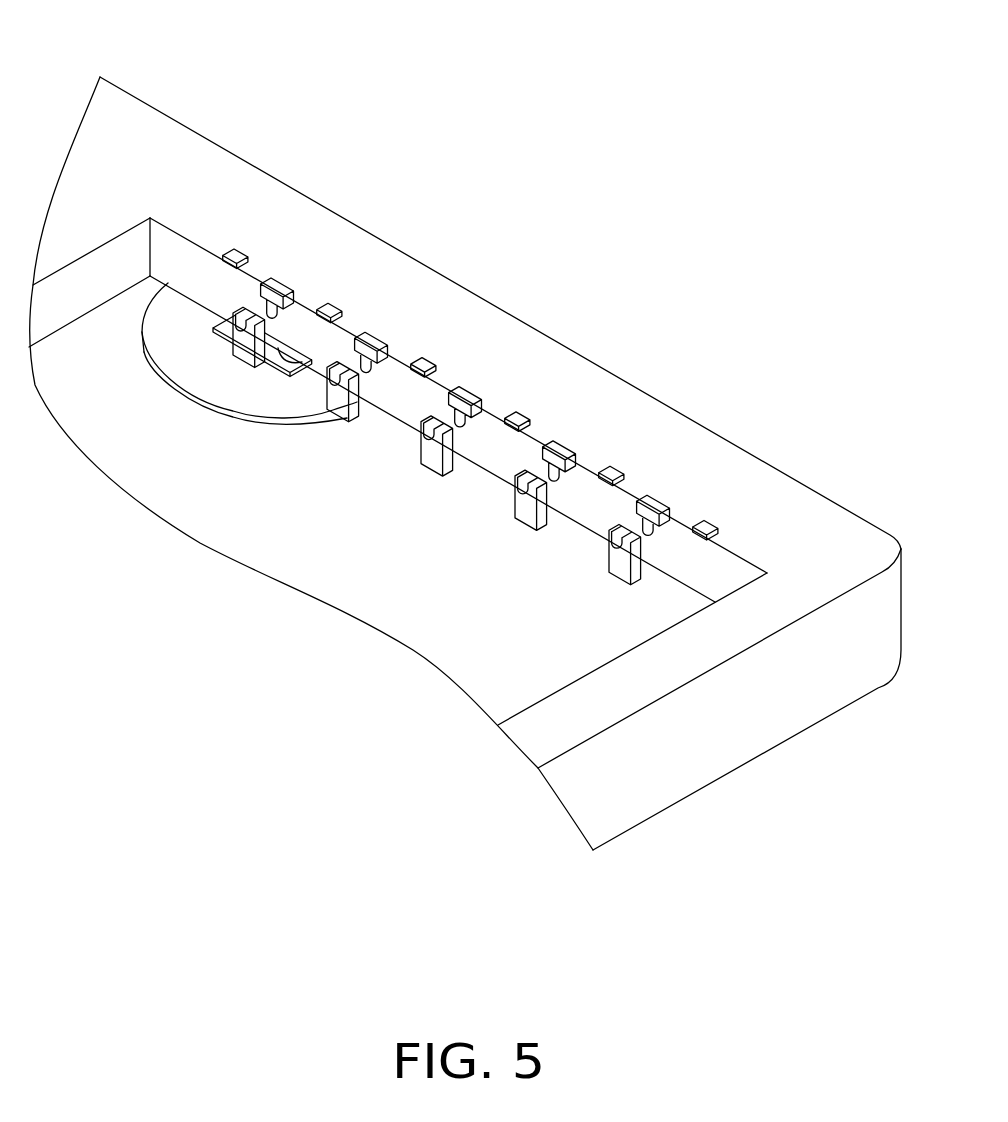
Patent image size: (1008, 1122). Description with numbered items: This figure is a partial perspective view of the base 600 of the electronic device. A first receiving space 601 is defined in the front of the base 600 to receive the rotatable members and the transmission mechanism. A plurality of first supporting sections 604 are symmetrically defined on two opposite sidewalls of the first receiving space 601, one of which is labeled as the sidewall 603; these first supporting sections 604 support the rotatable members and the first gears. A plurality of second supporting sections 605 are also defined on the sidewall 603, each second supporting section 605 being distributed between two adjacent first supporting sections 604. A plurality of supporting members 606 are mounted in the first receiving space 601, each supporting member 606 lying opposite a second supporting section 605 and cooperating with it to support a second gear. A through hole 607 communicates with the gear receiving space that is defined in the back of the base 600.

The base 600 is at (646, 787).
The first receiving space 601 is at (102, 362).
The sidewall 603 is at (167, 248).
The first supporting section 604 is at (243, 254).
The second supporting section 605 is at (283, 283).
The supporting member 606 is at (362, 388).
The through hole 607 is at (277, 348).